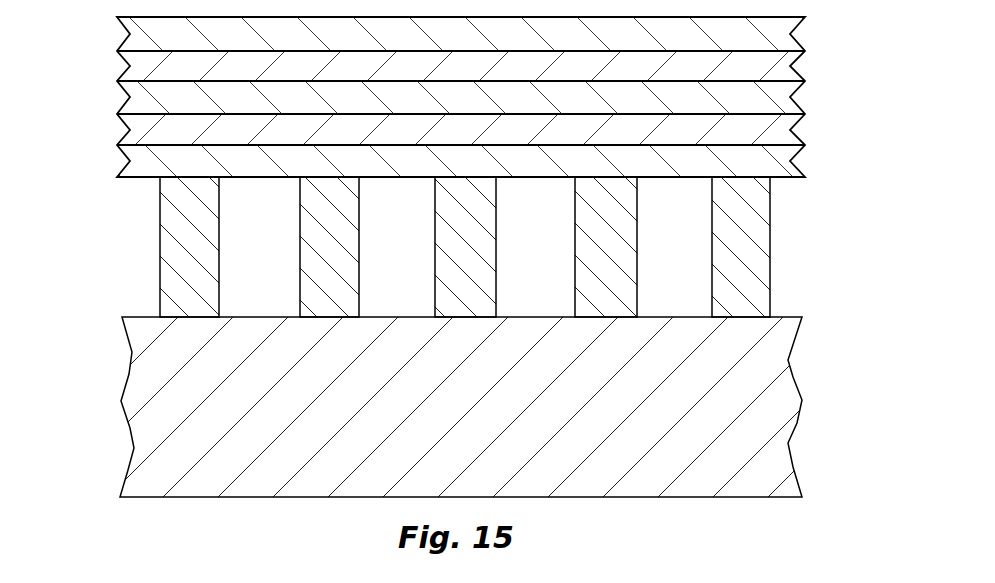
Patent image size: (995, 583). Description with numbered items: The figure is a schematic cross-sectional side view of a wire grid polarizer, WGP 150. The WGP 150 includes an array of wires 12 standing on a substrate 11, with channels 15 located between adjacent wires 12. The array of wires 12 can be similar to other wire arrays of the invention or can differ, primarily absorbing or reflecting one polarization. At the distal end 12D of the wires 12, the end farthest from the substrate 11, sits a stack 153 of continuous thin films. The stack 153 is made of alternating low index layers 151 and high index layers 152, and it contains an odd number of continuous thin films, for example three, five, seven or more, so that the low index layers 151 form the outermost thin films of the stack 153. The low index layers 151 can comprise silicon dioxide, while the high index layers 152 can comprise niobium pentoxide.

The substrate 11 is at (482, 433).
The wires 12 is at (394, 247).
The distal end 12D is at (472, 179).
The channels 15 is at (466, 253).
The WGP 150 is at (92, 424).
The low index layers 151 is at (483, 46).
The high index layers 152 is at (483, 78).
The stack of continuous thin films 153 is at (499, 97).